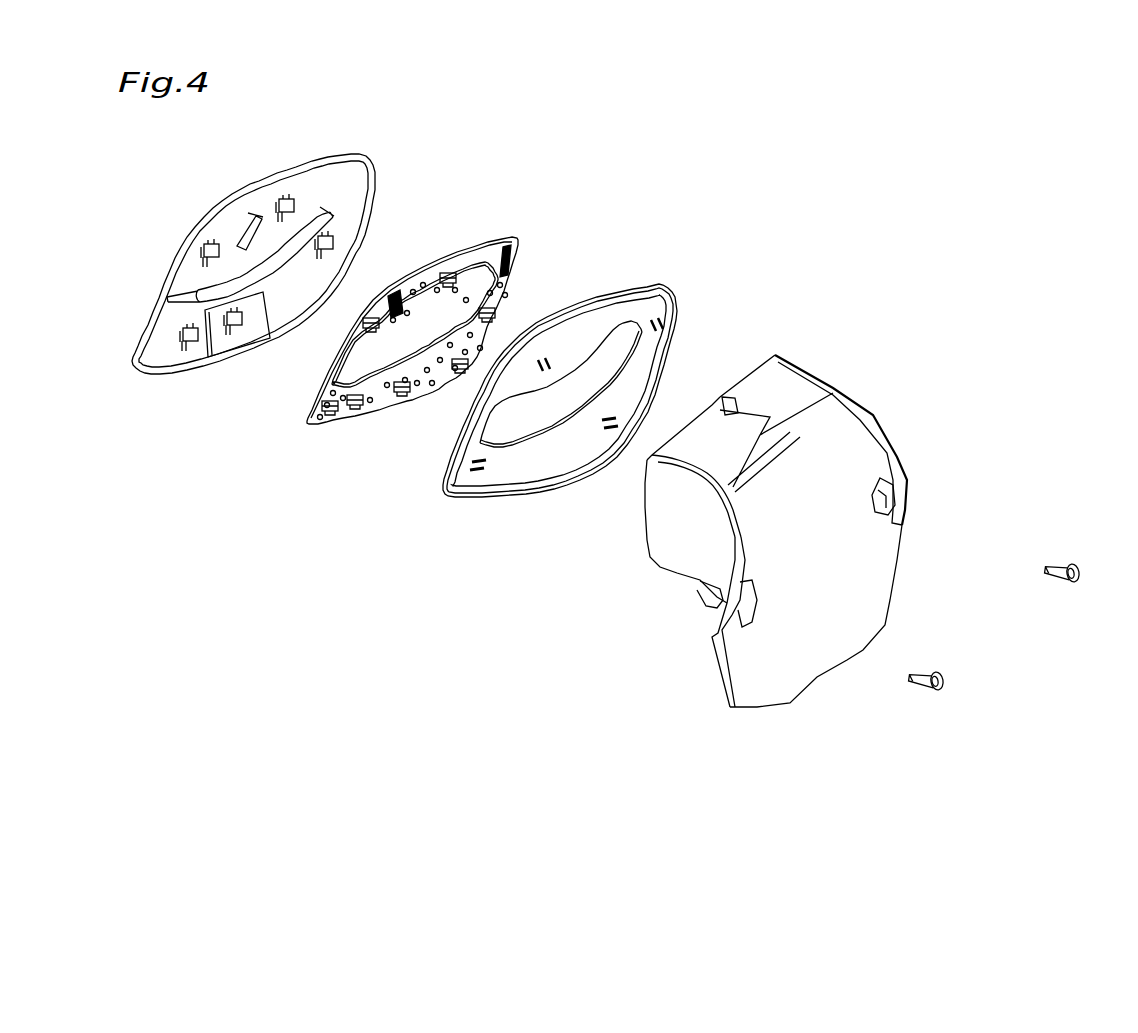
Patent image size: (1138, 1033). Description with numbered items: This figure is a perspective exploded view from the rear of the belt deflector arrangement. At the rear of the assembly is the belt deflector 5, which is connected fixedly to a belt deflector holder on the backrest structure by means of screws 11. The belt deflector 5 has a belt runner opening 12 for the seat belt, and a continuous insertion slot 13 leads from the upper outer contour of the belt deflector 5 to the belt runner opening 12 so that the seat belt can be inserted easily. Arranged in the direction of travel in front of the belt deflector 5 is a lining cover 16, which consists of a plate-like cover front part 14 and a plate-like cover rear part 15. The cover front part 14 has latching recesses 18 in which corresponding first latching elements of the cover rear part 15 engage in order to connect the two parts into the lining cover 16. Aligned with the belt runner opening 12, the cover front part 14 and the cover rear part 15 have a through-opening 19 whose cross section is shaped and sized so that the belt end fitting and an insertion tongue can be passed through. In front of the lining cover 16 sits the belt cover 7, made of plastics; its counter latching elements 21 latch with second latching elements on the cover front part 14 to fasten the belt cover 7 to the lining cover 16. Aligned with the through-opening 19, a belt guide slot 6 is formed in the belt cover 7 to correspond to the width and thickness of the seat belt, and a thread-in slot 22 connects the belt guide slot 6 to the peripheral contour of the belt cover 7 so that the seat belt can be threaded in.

The belt deflector 5 is at (880, 560).
The belt guide slot 6 is at (270, 283).
The belt cover 7 is at (300, 170).
The screws 11 is at (1097, 706).
The belt runner opening 12 is at (783, 435).
The insertion slot 13 is at (750, 413).
The cover front part 14 is at (445, 222).
The cover rear part 15 is at (615, 275).
The lining cover 16 is at (449, 600).
The latching recesses 18 is at (397, 292).
The through-opening 19 is at (375, 360).
The counter latching elements 21 is at (203, 243).
The thread-in slot 22 is at (203, 318).